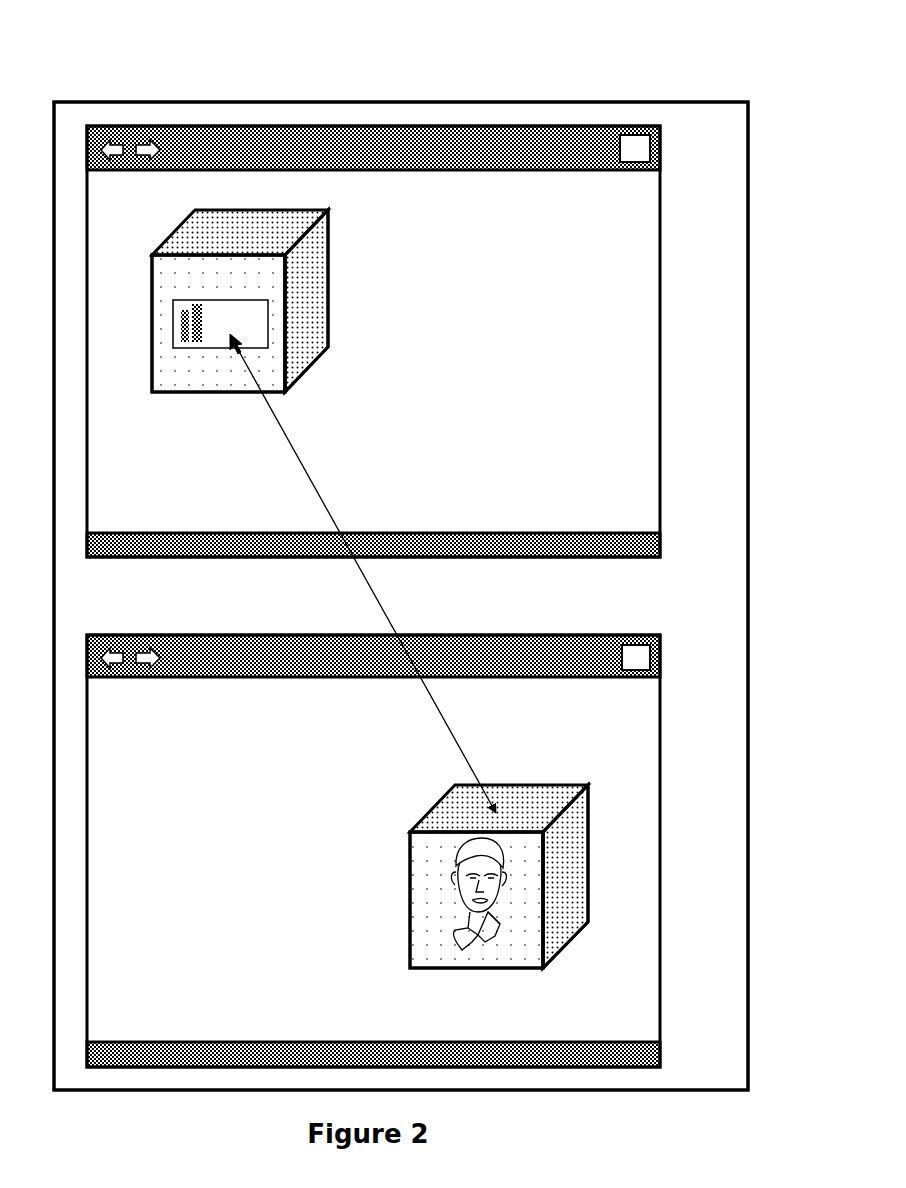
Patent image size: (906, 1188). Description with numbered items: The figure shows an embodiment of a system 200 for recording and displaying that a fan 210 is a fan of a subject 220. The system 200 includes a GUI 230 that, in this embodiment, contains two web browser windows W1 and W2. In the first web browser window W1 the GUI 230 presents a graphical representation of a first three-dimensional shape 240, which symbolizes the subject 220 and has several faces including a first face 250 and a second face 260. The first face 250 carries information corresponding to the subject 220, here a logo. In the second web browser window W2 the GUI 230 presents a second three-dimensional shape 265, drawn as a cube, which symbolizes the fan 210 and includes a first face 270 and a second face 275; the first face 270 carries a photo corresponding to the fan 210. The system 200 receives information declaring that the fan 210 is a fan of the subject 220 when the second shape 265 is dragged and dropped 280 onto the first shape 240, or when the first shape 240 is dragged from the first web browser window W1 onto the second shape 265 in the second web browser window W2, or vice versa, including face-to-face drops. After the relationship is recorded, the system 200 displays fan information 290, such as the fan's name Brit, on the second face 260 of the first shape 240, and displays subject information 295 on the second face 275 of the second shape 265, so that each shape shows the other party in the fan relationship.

The system 200 is at (420, 66).
The GUI 230 is at (748, 235).
The first web browser window W1 is at (660, 303).
The second web browser window W2 is at (660, 763).
The first three-dimensional shape 240 is at (154, 254).
The first face 250 is at (232, 378).
The second face 260 is at (325, 352).
The fan information 290 is at (328, 244).
The subject 220 is at (175, 319).
The dragged and dropped 280 is at (363, 578).
The second three-dimensional shape 265 is at (422, 814).
The first face 270 is at (508, 953).
The second face 275 is at (572, 928).
The subject information 295 is at (588, 875).
The fan 210 is at (455, 897).